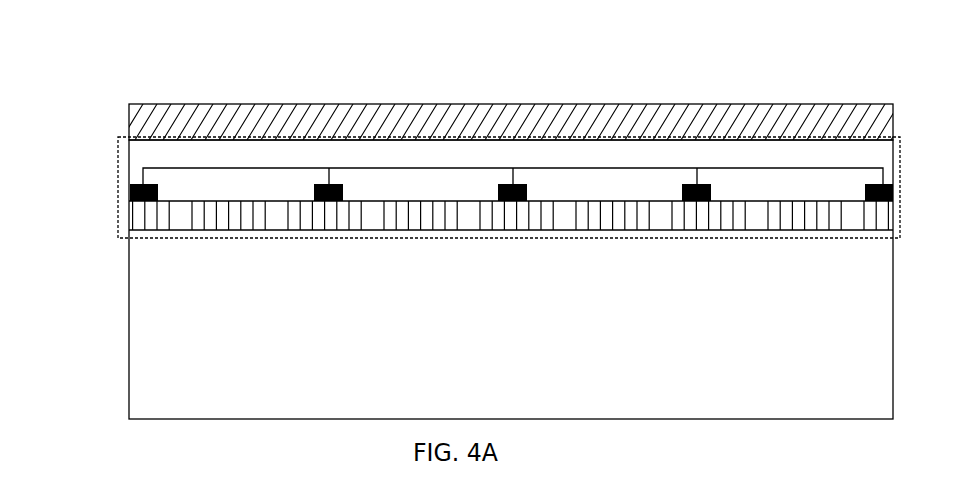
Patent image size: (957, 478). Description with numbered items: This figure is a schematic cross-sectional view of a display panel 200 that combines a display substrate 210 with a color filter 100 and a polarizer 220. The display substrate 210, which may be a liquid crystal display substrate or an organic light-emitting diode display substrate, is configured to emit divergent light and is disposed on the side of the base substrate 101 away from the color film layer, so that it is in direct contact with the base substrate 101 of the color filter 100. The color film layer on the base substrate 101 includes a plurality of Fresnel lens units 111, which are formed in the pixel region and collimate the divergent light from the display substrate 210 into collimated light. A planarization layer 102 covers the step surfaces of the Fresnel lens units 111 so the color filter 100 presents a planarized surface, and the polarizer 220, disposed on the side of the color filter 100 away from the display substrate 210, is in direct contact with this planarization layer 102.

The display panel 200 is at (888, 70).
The polarizer 220 is at (160, 122).
The display substrate 210 is at (160, 313).
The color filter 100 is at (118, 210).
The base substrate 101 is at (143, 222).
The planarization layer 102 is at (143, 153).
The Fresnel lens unit 111 is at (158, 178).